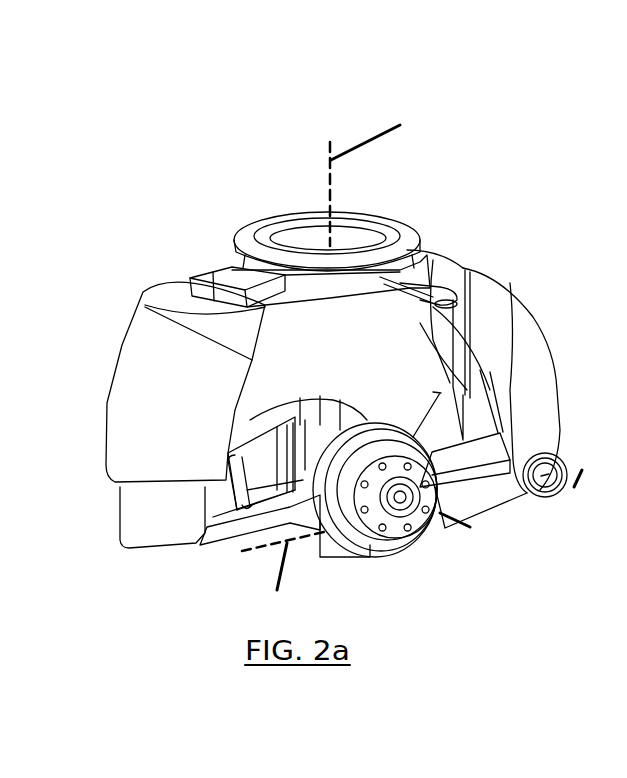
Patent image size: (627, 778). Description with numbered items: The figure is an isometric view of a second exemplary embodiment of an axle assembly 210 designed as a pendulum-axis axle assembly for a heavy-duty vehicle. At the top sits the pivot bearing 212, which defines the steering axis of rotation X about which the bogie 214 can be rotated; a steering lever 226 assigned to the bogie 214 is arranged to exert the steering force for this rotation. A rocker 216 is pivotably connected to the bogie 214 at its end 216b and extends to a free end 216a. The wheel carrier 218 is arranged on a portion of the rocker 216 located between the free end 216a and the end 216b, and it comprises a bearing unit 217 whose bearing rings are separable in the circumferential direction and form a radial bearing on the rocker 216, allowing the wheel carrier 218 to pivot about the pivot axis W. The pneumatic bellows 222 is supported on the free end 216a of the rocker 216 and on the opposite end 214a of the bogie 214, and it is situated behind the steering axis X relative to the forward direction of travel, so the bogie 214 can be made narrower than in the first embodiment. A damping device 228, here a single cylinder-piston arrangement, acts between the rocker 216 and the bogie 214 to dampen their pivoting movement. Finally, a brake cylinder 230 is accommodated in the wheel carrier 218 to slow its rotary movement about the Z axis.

The axle assembly 210 is at (172, 83).
The pivot bearing 212 is at (303, 225).
The bogie 214 is at (492, 298).
The end of the bogie 214a is at (222, 277).
The rocker 216 is at (475, 492).
The free end of the rocker 216a is at (230, 550).
The end of the rocker 216b is at (550, 460).
The bearing unit 217 is at (360, 567).
The wheel carrier 218 is at (410, 533).
The pneumatic bellows 222 is at (125, 380).
The steering lever 226 is at (450, 287).
The damping device 228 is at (450, 383).
The brake cylinder 230 is at (237, 505).